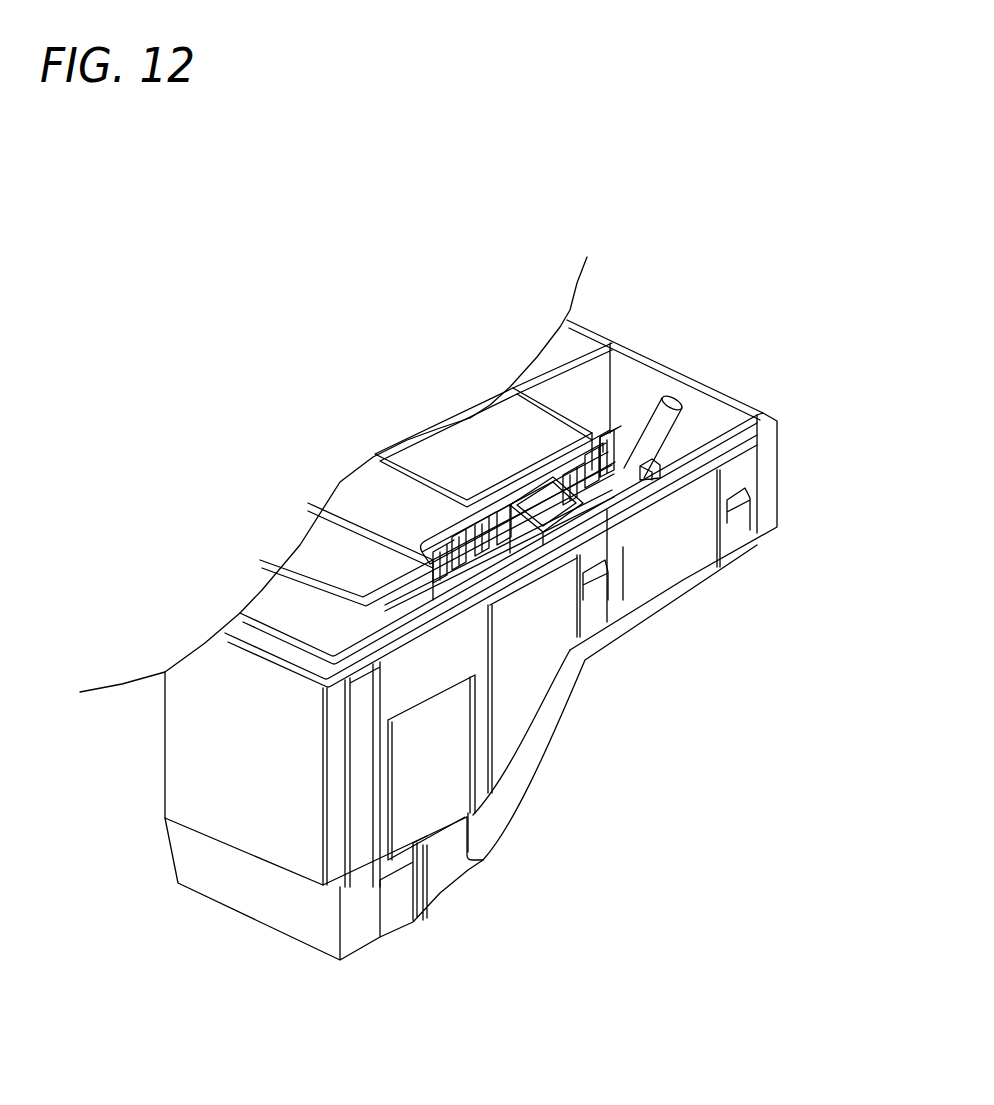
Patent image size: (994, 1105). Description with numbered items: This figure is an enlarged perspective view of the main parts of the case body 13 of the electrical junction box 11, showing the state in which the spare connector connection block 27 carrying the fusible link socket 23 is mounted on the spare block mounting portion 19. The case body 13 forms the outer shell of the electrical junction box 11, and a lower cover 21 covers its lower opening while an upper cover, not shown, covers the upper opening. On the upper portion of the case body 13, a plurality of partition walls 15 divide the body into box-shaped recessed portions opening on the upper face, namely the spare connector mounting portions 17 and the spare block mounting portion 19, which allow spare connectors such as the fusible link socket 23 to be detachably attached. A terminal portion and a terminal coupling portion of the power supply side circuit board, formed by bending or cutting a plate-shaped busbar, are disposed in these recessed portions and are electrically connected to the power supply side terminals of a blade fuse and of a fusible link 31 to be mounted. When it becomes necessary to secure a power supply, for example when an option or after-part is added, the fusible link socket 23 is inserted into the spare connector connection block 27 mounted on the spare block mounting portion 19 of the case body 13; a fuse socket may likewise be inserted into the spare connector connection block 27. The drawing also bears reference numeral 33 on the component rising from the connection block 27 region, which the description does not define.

The electrical junction box 11 is at (703, 283).
The case body 13 is at (773, 483).
The partition walls 15 is at (422, 500).
The spare connector mounting portions 17 is at (638, 384).
The spare block mounting portion 19 is at (612, 472).
The lower cover 21 is at (510, 807).
The fusible link socket 23 is at (525, 542).
The spare connector connection block 27 is at (418, 538).
The fusible link 31 is at (597, 505).
The tube 33 is at (657, 427).